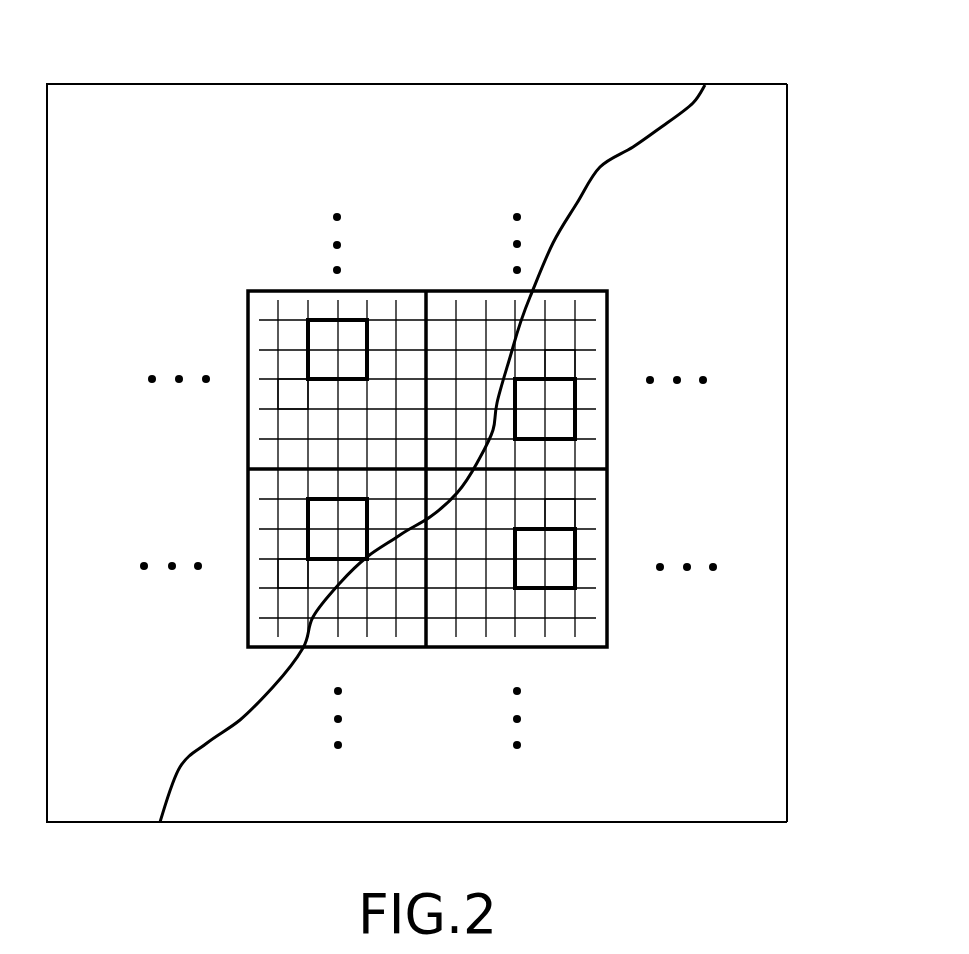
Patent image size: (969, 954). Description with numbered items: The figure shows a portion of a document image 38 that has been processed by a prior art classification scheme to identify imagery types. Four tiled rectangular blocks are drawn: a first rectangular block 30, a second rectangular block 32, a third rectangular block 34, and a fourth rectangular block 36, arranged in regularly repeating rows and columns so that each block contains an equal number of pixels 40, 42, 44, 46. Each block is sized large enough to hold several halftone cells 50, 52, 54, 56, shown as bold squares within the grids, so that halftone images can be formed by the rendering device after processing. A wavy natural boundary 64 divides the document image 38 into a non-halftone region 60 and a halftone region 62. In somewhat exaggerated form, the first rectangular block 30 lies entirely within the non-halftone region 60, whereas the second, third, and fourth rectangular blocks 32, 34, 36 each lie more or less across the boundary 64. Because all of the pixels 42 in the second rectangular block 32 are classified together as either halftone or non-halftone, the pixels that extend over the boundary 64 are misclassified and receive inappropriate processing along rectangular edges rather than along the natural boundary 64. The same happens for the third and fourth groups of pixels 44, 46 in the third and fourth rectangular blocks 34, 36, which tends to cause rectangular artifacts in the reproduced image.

The first rectangular block 30 is at (365, 287).
The second rectangular block 32 is at (497, 287).
The third rectangular block 34 is at (242, 635).
The fourth rectangular block 36 is at (613, 592).
The document image 38 is at (690, 752).
The pixels 40 is at (277, 390).
The pixels 42 is at (583, 372).
The pixels 44 is at (270, 568).
The pixels 46 is at (575, 503).
The halftone cell 50 is at (323, 312).
The halftone cell 52 is at (582, 423).
The halftone cell 54 is at (300, 523).
The halftone cell 56 is at (578, 550).
The non-halftone region 60 is at (470, 123).
The halftone region 62 is at (757, 348).
The boundary 64 is at (633, 148).